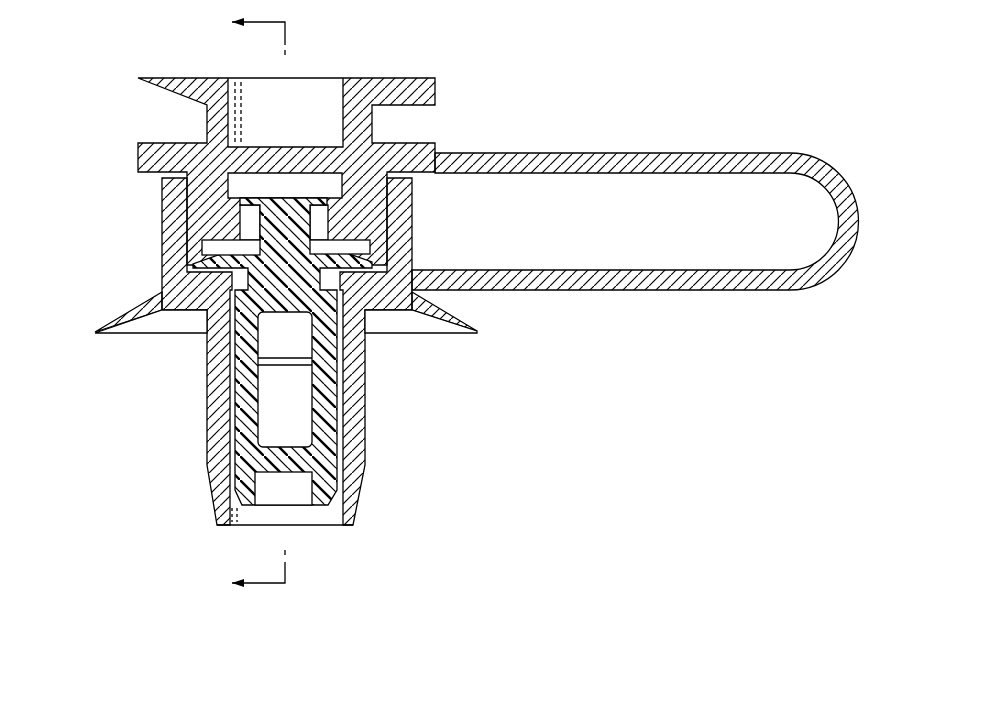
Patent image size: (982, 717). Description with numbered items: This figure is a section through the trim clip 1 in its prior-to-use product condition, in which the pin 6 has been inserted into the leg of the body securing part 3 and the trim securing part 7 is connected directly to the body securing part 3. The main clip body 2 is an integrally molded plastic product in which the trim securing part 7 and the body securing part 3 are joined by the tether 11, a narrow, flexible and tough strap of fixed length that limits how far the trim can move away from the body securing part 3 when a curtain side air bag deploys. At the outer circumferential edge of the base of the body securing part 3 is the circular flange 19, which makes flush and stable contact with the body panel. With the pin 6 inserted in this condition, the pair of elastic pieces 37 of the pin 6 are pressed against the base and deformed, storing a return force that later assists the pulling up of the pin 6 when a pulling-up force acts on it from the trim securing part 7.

The trim clip 1 is at (48, 270).
The main clip body 2 is at (152, 236).
The body securing part 3 is at (385, 388).
The pin 6 is at (222, 390).
The trim securing part 7 is at (408, 66).
The tether 11 is at (655, 160).
The circular flange 19 is at (448, 320).
The elastic pieces 37 is at (348, 240).